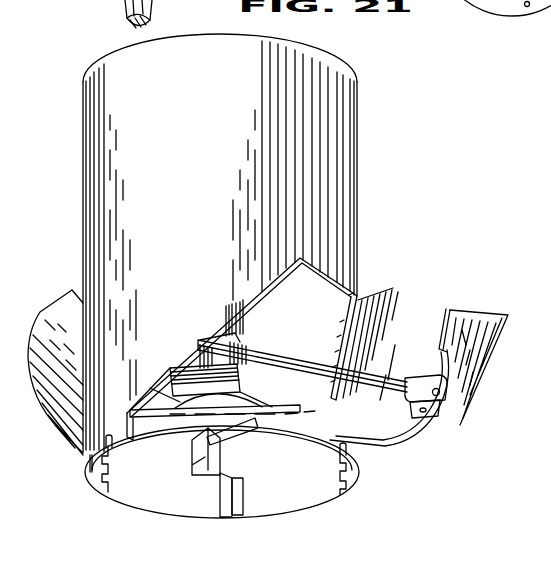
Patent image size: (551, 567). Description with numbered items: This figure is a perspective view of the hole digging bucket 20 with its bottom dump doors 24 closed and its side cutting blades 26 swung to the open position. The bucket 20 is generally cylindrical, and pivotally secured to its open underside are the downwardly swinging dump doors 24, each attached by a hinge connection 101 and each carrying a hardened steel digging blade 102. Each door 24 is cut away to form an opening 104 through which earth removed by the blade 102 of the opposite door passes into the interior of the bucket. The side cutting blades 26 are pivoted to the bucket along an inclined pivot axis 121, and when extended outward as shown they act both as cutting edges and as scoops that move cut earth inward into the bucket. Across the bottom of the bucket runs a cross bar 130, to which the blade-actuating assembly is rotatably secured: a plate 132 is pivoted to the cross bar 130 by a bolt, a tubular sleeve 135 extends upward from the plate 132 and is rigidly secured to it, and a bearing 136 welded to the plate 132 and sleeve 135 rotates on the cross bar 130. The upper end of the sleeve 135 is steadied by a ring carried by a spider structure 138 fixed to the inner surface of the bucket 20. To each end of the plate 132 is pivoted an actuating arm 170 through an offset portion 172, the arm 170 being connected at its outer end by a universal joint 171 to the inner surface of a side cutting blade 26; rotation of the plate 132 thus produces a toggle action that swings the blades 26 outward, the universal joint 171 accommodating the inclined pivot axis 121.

The bucket 20 is at (352, 215).
The bottom dump door 24 is at (163, 497).
The side cutting blade 26 is at (60, 400).
The hinge connection 101 is at (93, 480).
The digging blade 102 is at (232, 505).
The opening 104 is at (202, 450).
The inclined pivot axis 121 is at (445, 340).
The cross bar 130 is at (297, 418).
The plate 132 is at (258, 382).
The tubular sleeve 135 is at (243, 313).
The bearing 136 is at (203, 400).
The spider structure 138 is at (170, 0).
The actuating arm 170 is at (293, 358).
The universal joint 171 is at (417, 412).
The offset portion 172 is at (240, 363).